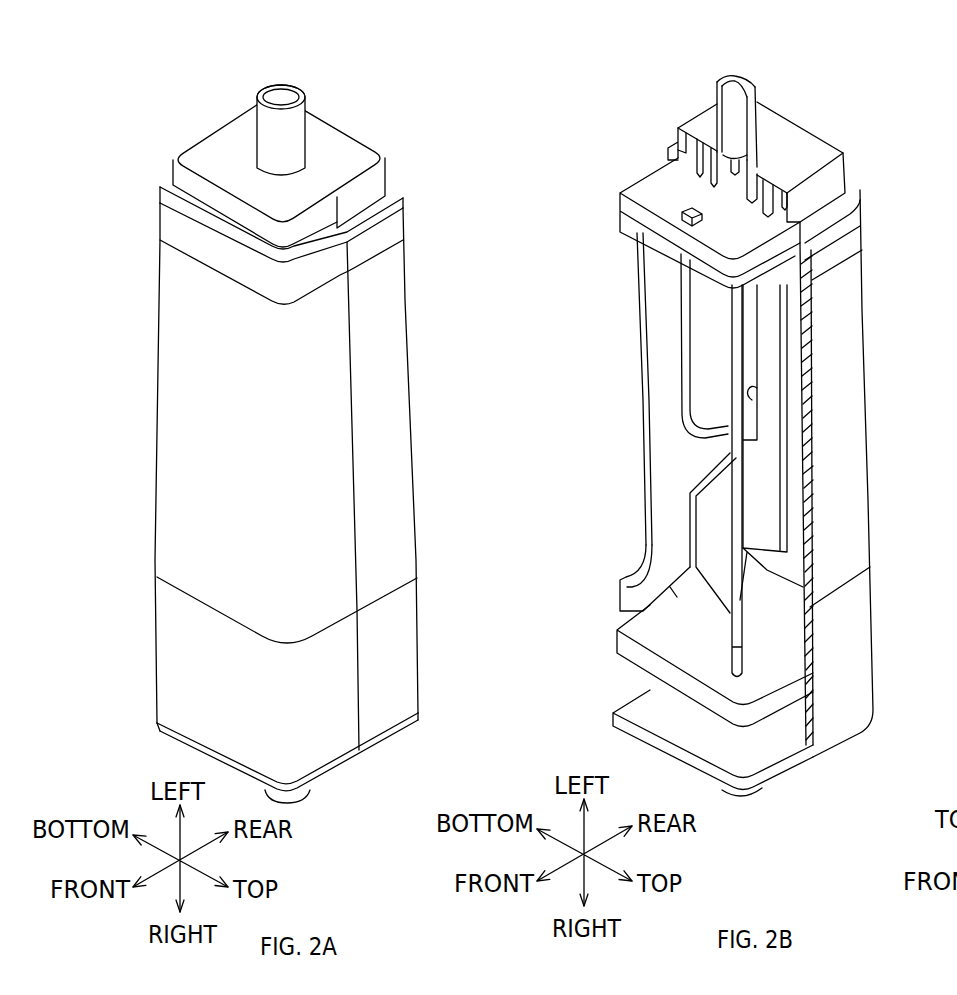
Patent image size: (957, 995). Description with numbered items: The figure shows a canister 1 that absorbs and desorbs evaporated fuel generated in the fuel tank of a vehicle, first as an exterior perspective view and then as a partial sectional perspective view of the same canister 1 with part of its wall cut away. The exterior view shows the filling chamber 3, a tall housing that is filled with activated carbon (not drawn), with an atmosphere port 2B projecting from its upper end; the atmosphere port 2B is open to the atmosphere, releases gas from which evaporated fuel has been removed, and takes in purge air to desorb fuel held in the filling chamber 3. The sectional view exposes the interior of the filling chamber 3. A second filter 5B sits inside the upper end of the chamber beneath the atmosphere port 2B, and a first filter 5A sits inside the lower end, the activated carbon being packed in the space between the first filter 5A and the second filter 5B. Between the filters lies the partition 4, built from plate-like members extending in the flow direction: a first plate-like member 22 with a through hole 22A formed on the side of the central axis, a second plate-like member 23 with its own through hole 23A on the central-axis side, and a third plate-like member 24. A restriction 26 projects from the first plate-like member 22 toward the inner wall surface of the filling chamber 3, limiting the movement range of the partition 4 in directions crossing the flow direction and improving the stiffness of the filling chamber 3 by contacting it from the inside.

In FIG. 2A, the canister 1 is at (129, 137).
In FIG. 2A, the atmosphere port 2B is at (302, 120).
In FIG. 2B, the atmosphere port 2B is at (758, 82).
In FIG. 2A, the filling chamber 3 is at (395, 345).
In FIG. 2B, the filling chamber 3 is at (850, 342).
In FIG. 2B, the partition 4 is at (617, 395).
In FIG. 2B, the first filter 5A is at (622, 657).
In FIG. 2B, the second filter 5B is at (647, 188).
In FIG. 2B, the first plate-like member 22 is at (642, 318).
In FIG. 2B, the through hole 22A is at (692, 304).
In FIG. 2B, the second plate-like member 23 is at (768, 468).
In FIG. 2B, the through hole 23A is at (752, 400).
In FIG. 2B, the third plate-like member 24 is at (702, 513).
In FIG. 2B, the restriction 26 is at (629, 596).